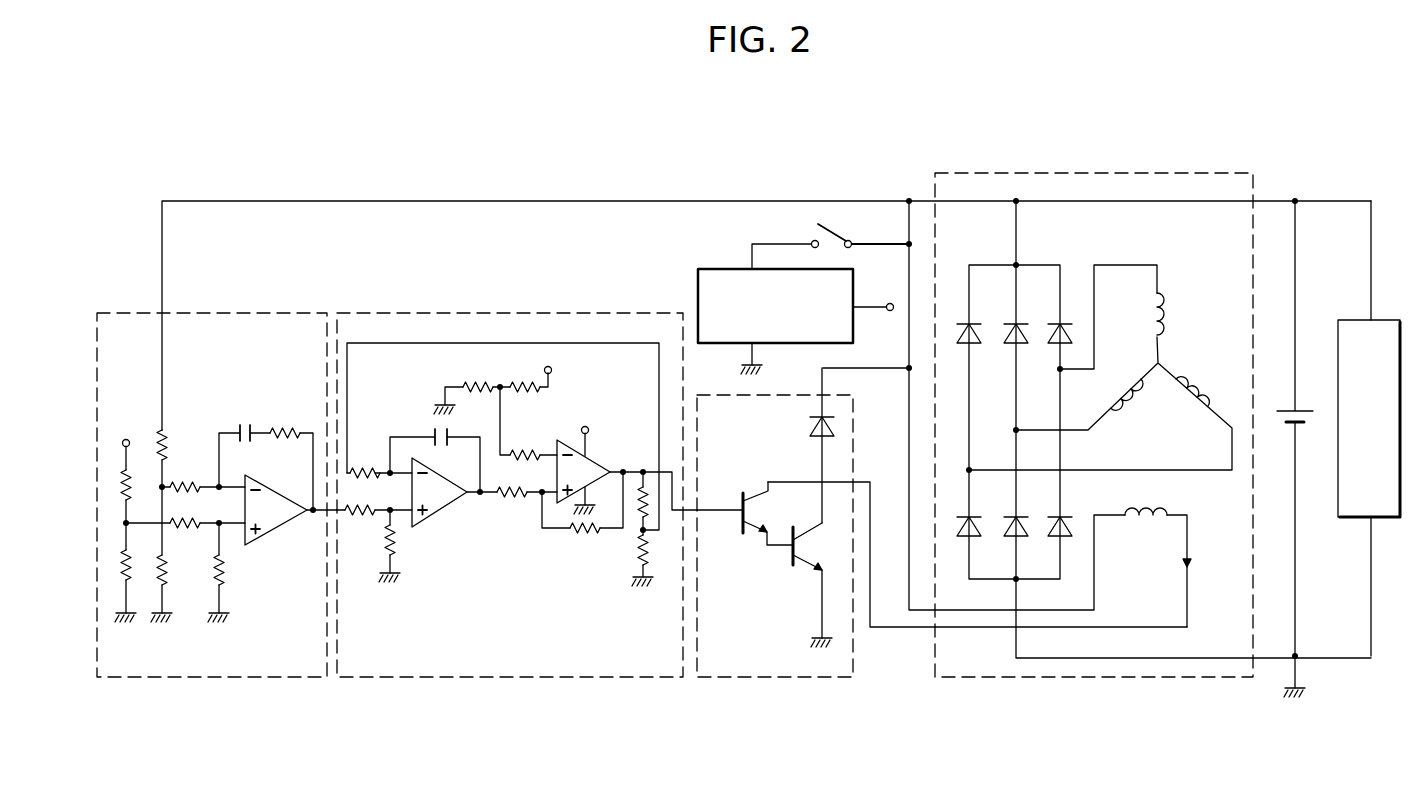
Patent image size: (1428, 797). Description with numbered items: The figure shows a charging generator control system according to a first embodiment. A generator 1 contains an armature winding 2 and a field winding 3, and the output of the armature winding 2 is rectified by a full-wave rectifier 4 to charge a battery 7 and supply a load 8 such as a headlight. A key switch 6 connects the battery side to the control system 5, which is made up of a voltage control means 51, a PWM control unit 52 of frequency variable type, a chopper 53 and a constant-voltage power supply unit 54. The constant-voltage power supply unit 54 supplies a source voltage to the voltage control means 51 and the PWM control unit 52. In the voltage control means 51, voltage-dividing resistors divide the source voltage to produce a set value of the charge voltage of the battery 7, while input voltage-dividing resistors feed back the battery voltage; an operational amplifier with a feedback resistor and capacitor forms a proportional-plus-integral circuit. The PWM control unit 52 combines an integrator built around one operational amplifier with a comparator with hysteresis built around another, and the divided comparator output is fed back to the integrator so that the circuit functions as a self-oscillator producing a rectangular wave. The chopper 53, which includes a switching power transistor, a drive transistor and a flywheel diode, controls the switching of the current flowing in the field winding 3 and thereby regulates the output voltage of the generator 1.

The generator 1 is at (1018, 678).
The armature winding 2 is at (1165, 364).
The field winding 3 is at (1148, 507).
The full-wave rectifier 4 is at (995, 276).
The control system 5 is at (619, 171).
The key switch 6 is at (848, 228).
The battery 7 is at (1300, 408).
The load 8 is at (1388, 320).
The voltage control means 51 is at (213, 678).
The PWM control unit 52 is at (516, 678).
The chopper 53 is at (768, 678).
The constant-voltage power supply unit 54 is at (716, 268).